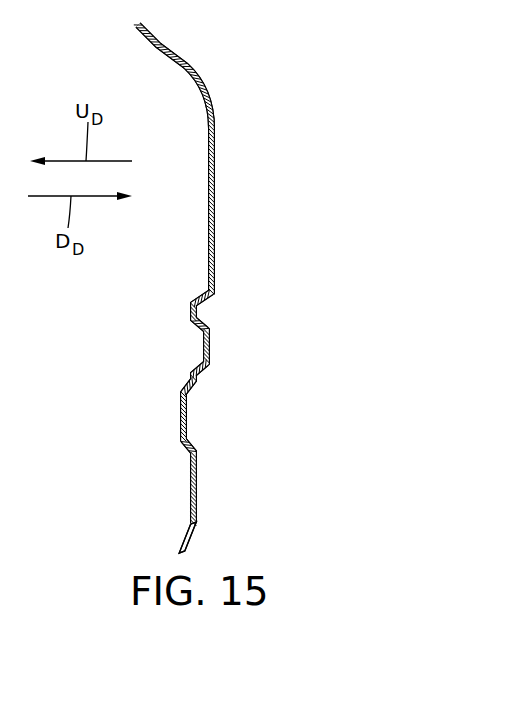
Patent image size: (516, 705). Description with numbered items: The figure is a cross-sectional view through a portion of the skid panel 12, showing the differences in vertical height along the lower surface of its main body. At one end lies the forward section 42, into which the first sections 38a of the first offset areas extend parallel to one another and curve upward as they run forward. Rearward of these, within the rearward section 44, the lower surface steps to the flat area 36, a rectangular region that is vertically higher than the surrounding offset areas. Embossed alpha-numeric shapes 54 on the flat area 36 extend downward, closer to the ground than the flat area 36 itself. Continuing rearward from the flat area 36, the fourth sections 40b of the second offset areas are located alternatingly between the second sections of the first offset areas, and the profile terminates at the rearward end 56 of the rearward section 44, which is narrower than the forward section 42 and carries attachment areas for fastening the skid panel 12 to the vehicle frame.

The skid panel 12 is at (247, 94).
The forward section 42 is at (150, 28).
The first sections of the first offset areas 38a is at (216, 174).
The rearward section 44 is at (209, 222).
The flat area 36 is at (196, 310).
The alpha-numeric shapes 54 is at (210, 352).
The fourth sections of the second offset areas 40b is at (187, 424).
The rearward end 56 is at (197, 490).